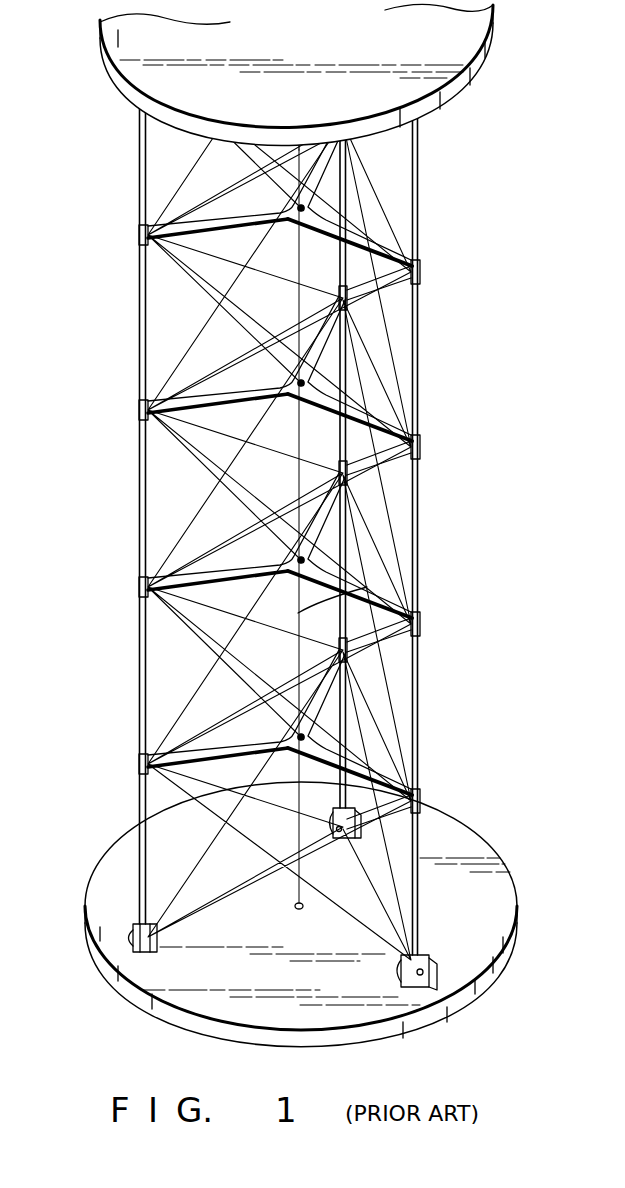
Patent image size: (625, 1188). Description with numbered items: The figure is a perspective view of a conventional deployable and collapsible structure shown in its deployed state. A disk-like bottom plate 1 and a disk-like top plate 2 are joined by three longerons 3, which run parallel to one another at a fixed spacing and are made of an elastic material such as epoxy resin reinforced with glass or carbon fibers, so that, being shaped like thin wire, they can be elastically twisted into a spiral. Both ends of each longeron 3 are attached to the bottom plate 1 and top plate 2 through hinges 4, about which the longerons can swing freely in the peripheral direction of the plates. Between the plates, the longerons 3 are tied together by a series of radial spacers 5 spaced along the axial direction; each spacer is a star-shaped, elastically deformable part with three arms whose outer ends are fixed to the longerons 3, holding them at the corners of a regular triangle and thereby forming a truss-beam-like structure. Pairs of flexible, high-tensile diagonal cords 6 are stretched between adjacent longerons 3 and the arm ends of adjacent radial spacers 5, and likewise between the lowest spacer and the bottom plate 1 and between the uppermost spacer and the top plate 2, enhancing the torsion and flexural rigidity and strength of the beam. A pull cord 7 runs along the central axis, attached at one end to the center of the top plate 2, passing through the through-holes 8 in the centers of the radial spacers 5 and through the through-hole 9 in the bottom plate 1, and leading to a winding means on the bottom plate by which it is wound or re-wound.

The bottom plate 1 is at (501, 890).
The top plate 2 is at (462, 62).
The longerons 3 is at (347, 537).
The hinges 4 is at (125, 937).
The radial spacers 5 is at (263, 213).
The diagonal cords 6 is at (212, 495).
The pull cord 7 is at (368, 586).
The through-holes 8 is at (306, 392).
The through-hole 9 is at (306, 908).